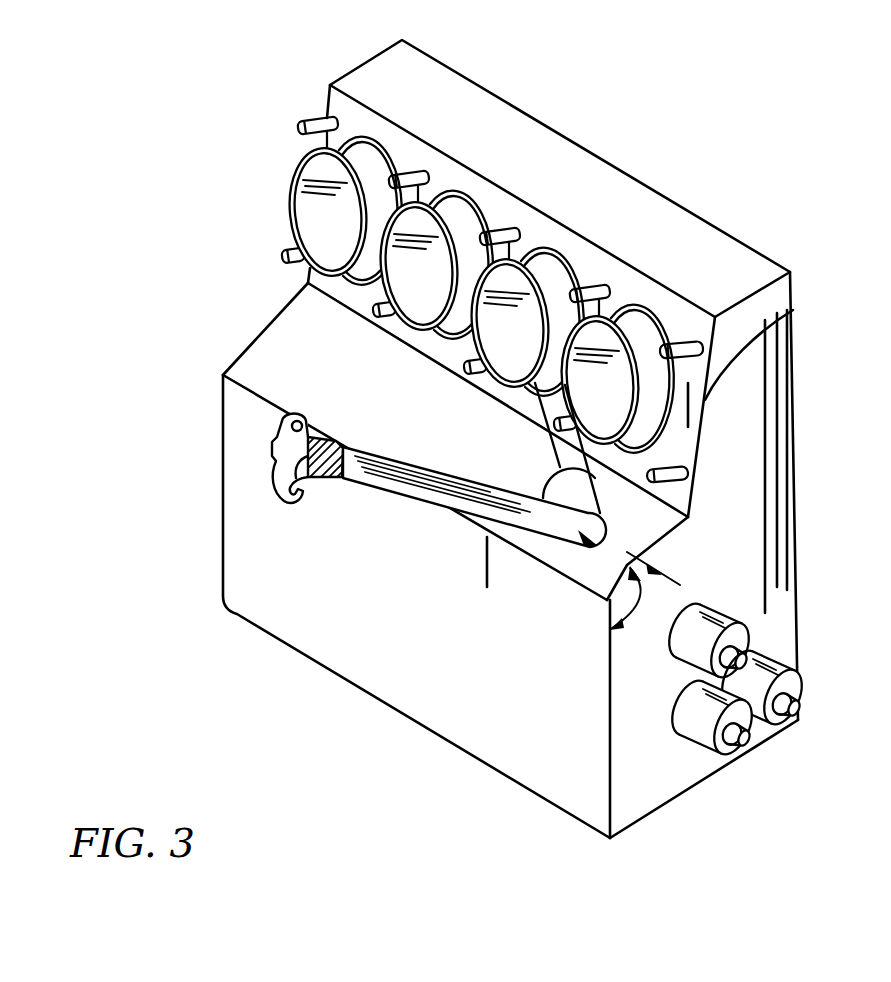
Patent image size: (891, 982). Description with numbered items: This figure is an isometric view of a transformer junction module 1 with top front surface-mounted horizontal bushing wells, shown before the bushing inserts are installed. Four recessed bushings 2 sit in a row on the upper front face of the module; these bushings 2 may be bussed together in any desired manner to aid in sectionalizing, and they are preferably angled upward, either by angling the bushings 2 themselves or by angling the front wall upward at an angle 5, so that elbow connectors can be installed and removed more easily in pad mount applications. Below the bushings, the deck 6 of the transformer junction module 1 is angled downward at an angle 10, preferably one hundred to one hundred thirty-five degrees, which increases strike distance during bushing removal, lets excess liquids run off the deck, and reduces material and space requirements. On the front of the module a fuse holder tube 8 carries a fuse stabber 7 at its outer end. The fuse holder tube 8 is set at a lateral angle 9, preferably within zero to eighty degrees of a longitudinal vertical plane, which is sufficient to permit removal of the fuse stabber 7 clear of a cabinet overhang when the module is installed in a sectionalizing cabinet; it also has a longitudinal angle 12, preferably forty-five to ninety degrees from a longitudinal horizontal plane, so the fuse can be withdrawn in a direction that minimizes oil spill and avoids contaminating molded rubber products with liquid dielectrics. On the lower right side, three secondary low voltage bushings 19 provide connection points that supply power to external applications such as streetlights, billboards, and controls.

The transformer junction module 1 is at (607, 178).
The bushings 2 is at (456, 216).
The angle 5 is at (780, 313).
The deck 6 is at (273, 352).
The fuse stabber 7 is at (322, 495).
The fuse holder tube 8 is at (415, 503).
The lateral angle 9 is at (577, 293).
The angle 10 is at (630, 585).
The longitudinal angle 12 is at (600, 592).
The bushings 19 is at (782, 687).